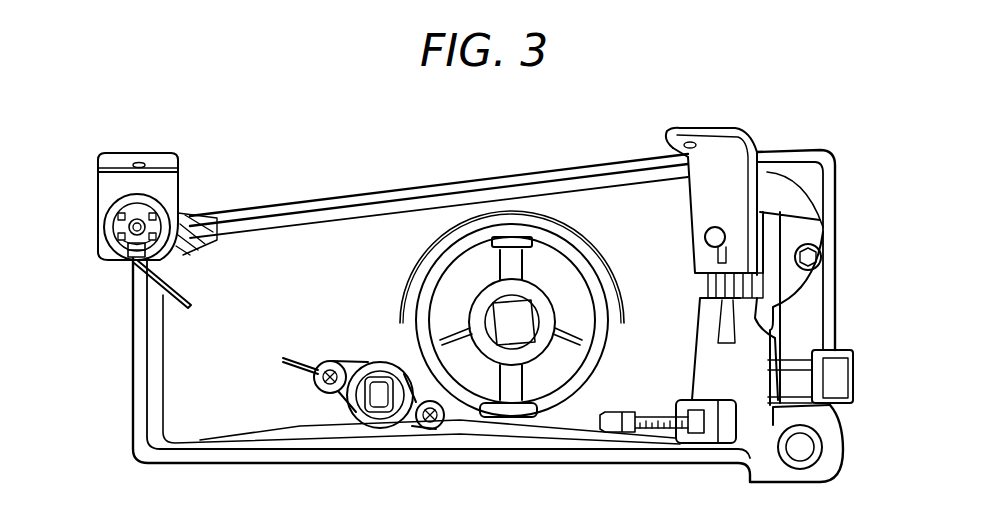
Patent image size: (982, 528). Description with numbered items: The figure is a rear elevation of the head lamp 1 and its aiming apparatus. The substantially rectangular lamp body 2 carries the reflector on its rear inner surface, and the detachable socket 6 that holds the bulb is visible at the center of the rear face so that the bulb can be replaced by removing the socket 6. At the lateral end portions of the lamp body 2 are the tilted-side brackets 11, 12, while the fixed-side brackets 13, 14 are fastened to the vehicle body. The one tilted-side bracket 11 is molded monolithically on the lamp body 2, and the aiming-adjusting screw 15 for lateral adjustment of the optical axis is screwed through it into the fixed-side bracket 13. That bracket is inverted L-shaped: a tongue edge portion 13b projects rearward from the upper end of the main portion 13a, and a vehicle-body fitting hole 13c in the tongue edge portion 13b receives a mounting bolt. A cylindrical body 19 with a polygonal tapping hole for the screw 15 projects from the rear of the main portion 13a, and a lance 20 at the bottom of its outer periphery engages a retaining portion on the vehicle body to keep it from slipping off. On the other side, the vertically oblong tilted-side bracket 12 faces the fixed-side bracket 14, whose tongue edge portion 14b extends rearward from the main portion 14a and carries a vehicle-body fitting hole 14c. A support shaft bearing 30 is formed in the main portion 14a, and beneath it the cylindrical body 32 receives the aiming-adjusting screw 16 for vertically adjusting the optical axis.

The head lamp 1 is at (420, 178).
The lamp body 2 is at (333, 236).
The socket 6 is at (503, 330).
The tilted-side bracket 11 is at (148, 296).
The tilted-side bracket 12 is at (808, 224).
The fixed-side bracket 13 is at (183, 178).
The main portion 13a is at (108, 190).
The tongue edge portion 13b is at (178, 152).
The vehicle-body fitting hole 13c is at (141, 162).
The fixed-side bracket 14 is at (727, 128).
The main portion 14a is at (705, 205).
The tongue edge portion 14b is at (677, 137).
The vehicle-body fitting hole 14c is at (672, 141).
The aiming-adjusting screw 15 is at (133, 223).
The aiming-adjusting screw 16 is at (660, 410).
The cylindrical body 19 is at (172, 222).
The lance 20 is at (129, 252).
The support shaft bearing 30 is at (705, 240).
The cylindrical body 32 is at (724, 450).